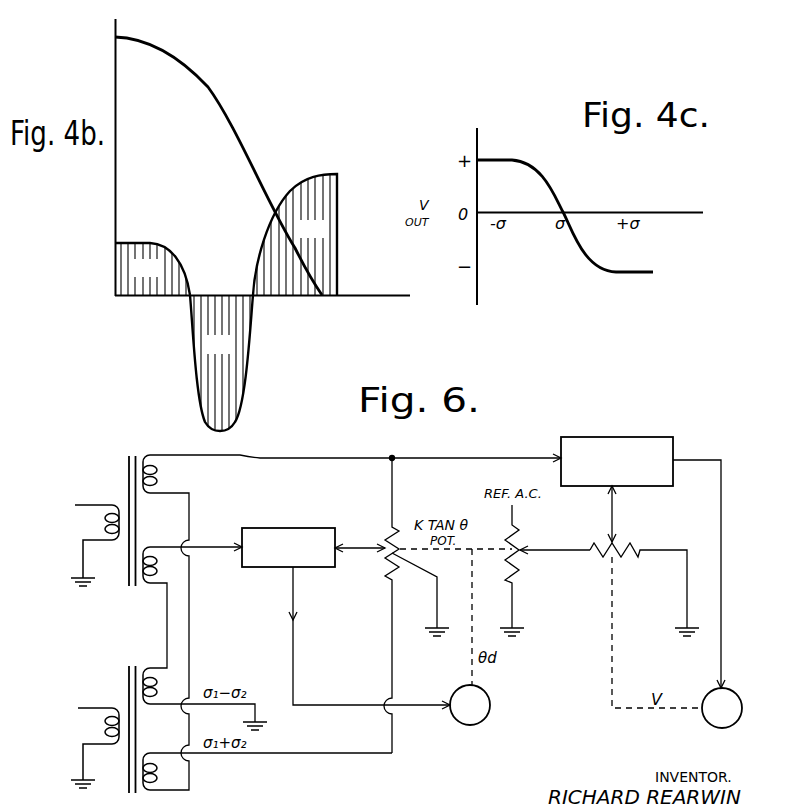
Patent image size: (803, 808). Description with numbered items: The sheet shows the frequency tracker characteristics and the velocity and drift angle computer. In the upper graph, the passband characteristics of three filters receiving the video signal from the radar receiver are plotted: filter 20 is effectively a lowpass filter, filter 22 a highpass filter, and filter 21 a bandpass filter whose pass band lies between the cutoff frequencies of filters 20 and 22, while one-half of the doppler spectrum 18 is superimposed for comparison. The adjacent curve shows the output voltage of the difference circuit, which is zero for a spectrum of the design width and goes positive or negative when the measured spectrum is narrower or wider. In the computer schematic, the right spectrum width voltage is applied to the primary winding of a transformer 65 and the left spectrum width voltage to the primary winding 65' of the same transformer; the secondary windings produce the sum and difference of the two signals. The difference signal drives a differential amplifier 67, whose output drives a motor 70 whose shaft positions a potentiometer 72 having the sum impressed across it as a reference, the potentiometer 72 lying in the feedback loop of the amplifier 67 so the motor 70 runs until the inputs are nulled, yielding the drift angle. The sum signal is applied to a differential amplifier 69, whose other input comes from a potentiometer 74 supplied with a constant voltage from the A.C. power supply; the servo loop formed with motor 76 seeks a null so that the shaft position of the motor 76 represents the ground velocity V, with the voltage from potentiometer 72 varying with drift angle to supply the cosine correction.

In FIG. 4B, the doppler spectrum 18 is at (232, 125).
In FIG. 4B, the filter 20 is at (153, 266).
In FIG. 4B, the filter 21 is at (221, 365).
In FIG. 4B, the filter 22 is at (295, 233).
In FIG. 6, the transformer 65 is at (95, 528).
In FIG. 6, the primary winding 65' is at (95, 730).
In FIG. 6, the differential amplifier 67 is at (298, 528).
In FIG. 6, the differential amplifier 69 is at (638, 437).
In FIG. 6, the motor 70 is at (466, 726).
In FIG. 6, the potentiometer 72 is at (388, 574).
In FIG. 6, the potentiometer 74 is at (523, 566).
In FIG. 6, the motor 76 is at (724, 729).